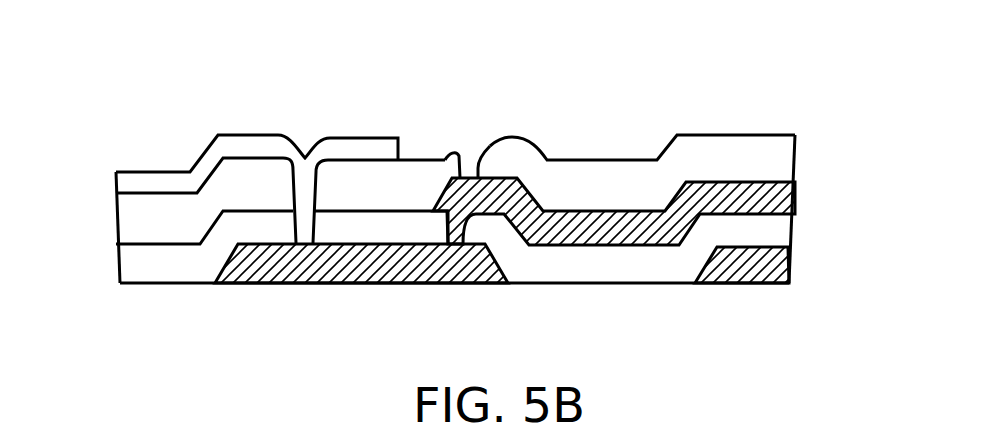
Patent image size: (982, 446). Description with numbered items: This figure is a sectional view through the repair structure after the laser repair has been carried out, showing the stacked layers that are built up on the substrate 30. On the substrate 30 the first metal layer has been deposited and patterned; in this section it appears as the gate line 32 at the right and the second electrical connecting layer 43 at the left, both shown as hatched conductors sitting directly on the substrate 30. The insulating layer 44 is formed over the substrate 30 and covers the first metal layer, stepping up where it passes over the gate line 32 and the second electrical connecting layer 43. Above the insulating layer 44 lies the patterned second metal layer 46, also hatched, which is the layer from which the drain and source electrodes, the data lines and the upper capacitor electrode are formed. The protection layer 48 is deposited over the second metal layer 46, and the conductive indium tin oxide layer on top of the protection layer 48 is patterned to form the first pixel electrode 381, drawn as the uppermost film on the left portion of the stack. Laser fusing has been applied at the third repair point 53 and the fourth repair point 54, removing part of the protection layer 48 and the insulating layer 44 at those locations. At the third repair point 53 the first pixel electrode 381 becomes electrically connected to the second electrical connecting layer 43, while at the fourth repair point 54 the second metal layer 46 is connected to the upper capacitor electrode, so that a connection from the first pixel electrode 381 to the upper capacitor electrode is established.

The substrate 30 is at (618, 328).
The gate line 32 is at (747, 275).
The second electrical connecting layer 43 is at (347, 265).
The insulating layer 44 is at (155, 268).
The second metal layer 46 is at (777, 203).
The protection layer 48 is at (142, 219).
The first pixel electrode 381 is at (248, 148).
The third repair point 53 is at (312, 124).
The fourth repair point 54 is at (472, 128).